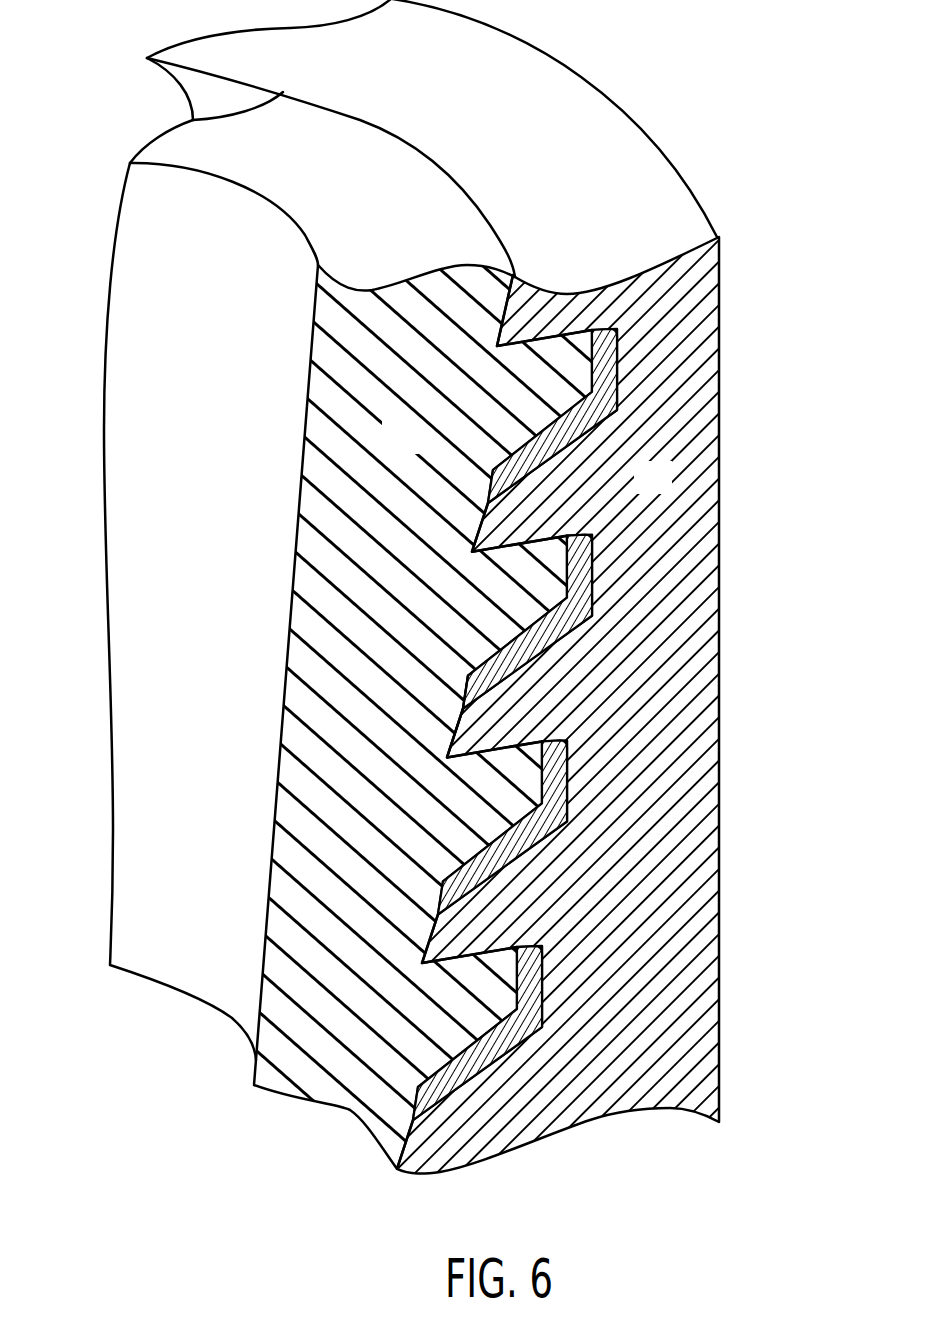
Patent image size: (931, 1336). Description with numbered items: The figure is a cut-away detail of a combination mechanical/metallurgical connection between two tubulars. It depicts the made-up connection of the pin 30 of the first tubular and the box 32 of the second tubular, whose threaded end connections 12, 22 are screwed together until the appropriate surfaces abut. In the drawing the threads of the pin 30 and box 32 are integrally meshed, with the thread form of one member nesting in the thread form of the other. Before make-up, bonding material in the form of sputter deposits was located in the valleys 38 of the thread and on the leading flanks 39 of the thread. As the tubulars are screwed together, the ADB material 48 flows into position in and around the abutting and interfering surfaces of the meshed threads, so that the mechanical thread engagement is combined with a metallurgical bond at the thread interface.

The threaded end connection 12 is at (458, 265).
The threaded end connection 22 is at (620, 353).
The pin 30 is at (417, 451).
The box 32 is at (668, 490).
The valleys of the thread 38 is at (458, 716).
The leading flanks of the thread 39 is at (448, 755).
The ADB material (sputter deposits) 48 is at (593, 592).